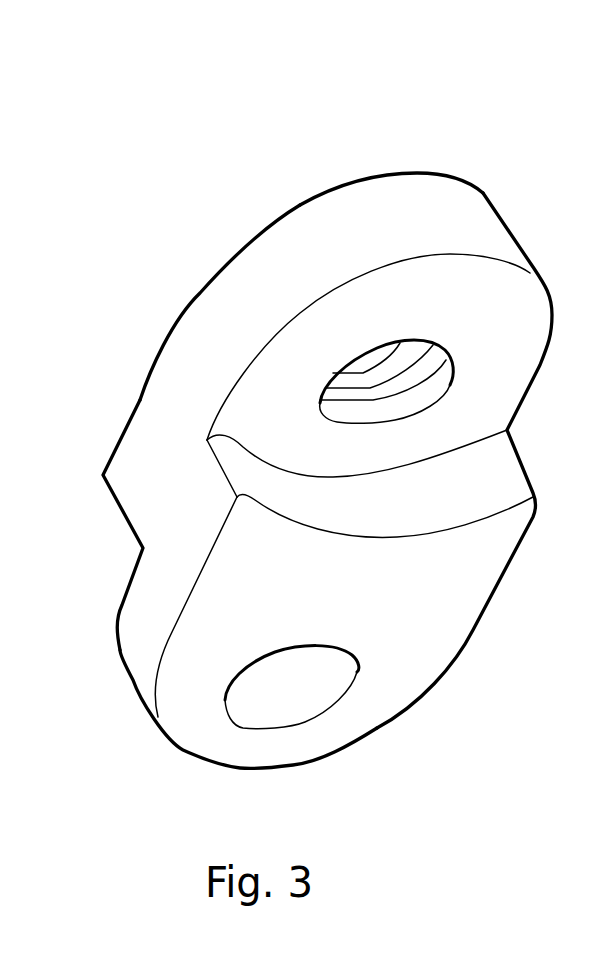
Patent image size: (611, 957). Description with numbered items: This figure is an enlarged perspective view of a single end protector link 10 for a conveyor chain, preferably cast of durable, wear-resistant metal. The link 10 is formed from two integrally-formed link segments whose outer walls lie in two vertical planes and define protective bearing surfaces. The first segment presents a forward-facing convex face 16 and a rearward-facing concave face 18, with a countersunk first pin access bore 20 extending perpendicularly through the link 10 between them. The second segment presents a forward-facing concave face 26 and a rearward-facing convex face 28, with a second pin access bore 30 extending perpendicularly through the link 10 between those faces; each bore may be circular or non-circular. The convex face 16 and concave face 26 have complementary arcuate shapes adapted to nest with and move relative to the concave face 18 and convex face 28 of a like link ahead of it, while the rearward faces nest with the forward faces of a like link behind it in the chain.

The end protector link 10 is at (271, 124).
The forward-facing convex face 16 is at (388, 197).
The rearward-facing concave face 18 is at (122, 513).
The first pin access bore 20 is at (445, 388).
The forward-facing concave face 26 is at (293, 493).
The rearward-facing convex face 28 is at (290, 767).
The second pin access bore 30 is at (227, 700).